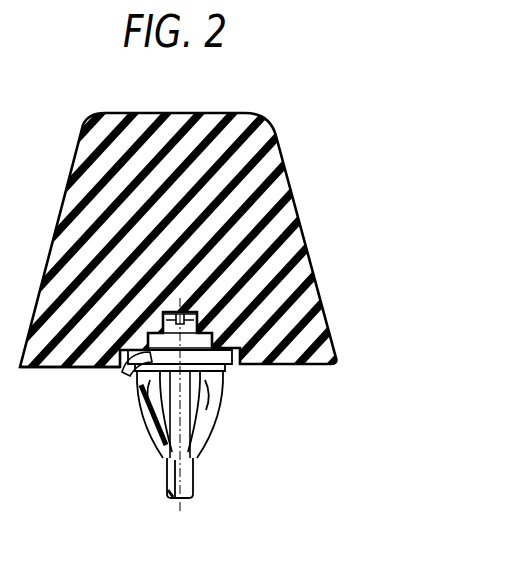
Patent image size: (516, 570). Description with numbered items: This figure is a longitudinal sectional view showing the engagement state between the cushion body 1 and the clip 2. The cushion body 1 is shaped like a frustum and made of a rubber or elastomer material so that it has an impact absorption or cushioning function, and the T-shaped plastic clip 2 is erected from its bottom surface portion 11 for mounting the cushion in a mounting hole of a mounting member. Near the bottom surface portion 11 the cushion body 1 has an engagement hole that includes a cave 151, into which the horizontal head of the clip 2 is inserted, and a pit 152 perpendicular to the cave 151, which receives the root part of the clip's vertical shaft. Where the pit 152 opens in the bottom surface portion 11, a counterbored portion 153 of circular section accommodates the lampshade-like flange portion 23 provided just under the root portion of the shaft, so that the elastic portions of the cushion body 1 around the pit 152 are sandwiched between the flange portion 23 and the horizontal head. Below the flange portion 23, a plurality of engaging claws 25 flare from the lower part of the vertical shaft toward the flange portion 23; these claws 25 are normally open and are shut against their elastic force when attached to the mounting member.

The cushion body 1 is at (306, 166).
The bottom surface portion 11 is at (56, 384).
The clip 2 is at (233, 401).
The cave 151 is at (205, 322).
The pit 152 is at (210, 372).
The counterbored portion 153 is at (230, 362).
The flange portion 23 is at (130, 380).
The engaging claws 25 is at (148, 440).